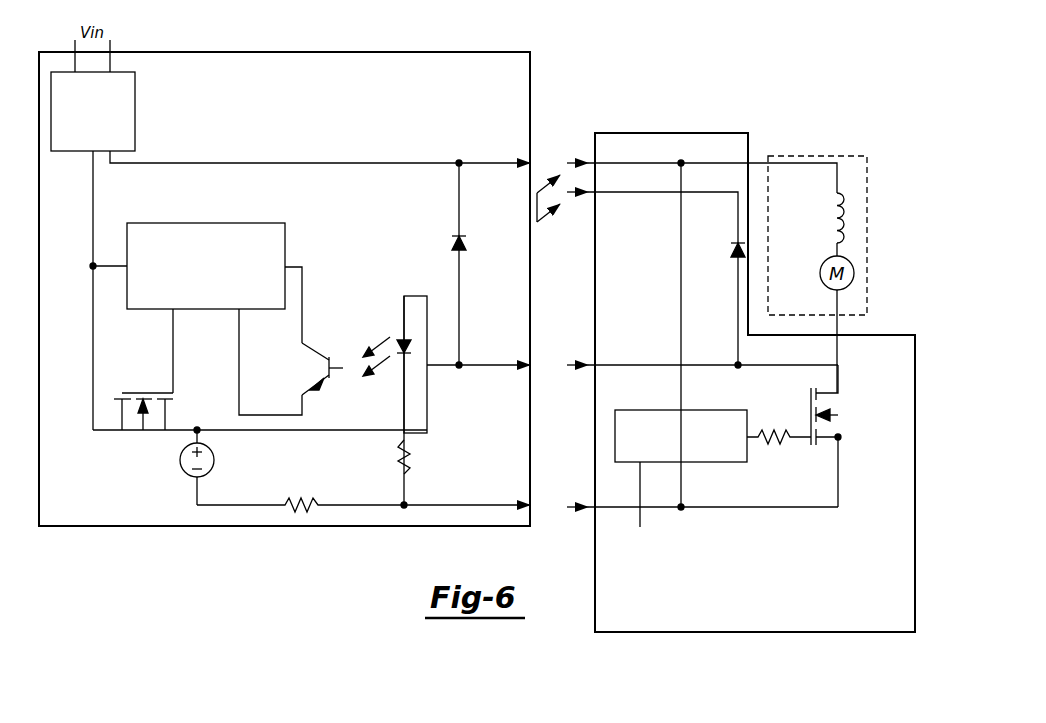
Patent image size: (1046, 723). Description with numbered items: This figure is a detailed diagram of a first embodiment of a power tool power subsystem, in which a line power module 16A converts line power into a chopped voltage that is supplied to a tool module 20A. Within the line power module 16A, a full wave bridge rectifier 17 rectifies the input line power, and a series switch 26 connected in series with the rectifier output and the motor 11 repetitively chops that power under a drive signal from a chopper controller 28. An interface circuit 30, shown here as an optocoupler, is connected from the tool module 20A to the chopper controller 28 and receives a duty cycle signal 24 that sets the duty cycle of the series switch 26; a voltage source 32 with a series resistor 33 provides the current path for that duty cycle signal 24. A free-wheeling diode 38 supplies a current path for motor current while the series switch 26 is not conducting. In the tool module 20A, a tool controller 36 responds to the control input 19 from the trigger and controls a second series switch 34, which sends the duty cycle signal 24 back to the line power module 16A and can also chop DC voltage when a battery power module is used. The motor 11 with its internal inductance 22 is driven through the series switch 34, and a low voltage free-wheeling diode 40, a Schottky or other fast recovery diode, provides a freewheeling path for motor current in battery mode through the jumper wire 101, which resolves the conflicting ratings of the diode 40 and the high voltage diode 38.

The line power module 16A is at (290, 52).
The full wave bridge rectifier 17 is at (135, 135).
The chopper controller 28 is at (285, 230).
The series switch 26 is at (153, 393).
The interface circuit 30 is at (345, 368).
The free-wheeling diode 38 is at (456, 218).
The voltage source 32 is at (185, 475).
The series resistor 33 is at (305, 500).
The duty cycle signal 24 is at (513, 368).
The jumper wire 101 is at (537, 222).
The tool module 20A is at (673, 133).
The free-wheeling diode 40 is at (738, 243).
The tool controller 36 is at (628, 410).
The series switch 34 is at (840, 388).
The motor 11 is at (800, 156).
The internal inductance 22 is at (845, 222).
The control input 19 is at (640, 578).